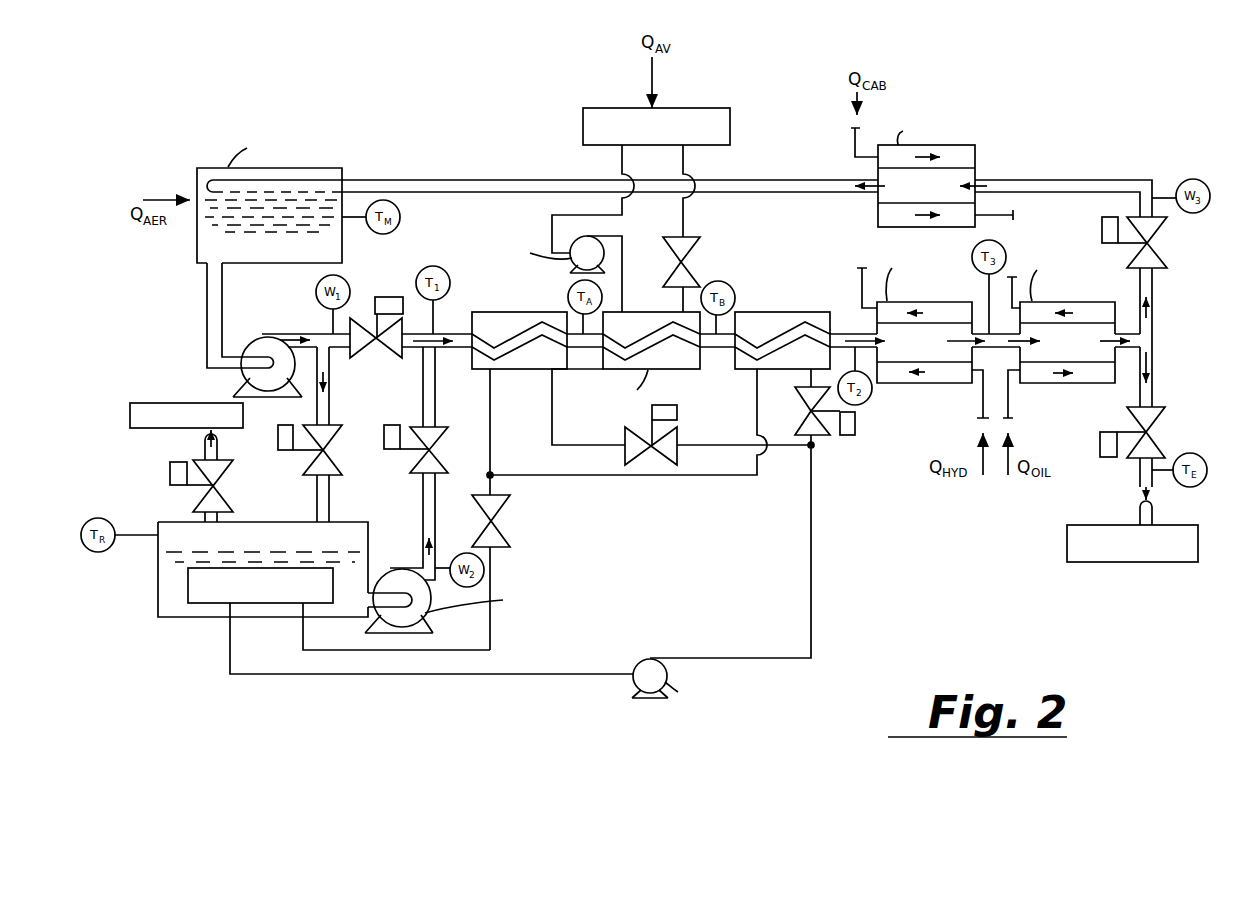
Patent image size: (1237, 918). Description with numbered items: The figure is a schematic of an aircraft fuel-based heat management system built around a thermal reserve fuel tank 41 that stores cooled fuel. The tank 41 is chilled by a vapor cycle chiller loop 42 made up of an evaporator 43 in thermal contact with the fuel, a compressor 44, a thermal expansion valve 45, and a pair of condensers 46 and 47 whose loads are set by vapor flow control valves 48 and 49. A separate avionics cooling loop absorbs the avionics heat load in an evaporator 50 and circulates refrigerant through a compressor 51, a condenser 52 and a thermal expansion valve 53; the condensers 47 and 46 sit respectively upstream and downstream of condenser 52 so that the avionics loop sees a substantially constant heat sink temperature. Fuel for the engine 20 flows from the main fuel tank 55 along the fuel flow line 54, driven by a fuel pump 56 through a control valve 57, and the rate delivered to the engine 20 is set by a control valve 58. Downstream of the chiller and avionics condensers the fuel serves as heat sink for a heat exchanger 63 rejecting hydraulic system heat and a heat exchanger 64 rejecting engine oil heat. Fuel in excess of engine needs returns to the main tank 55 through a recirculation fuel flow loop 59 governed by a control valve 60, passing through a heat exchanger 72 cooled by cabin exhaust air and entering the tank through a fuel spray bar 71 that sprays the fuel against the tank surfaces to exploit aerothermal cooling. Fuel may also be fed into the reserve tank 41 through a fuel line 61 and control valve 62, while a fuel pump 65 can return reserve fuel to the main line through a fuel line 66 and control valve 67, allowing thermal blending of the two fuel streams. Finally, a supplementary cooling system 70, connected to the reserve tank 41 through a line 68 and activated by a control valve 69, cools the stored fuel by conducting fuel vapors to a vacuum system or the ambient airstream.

The engine 20 is at (1067, 550).
The thermal reserve fuel tank 41 is at (158, 577).
The vapor cycle chiller loop 42 is at (810, 517).
The evaporator 43 is at (187, 588).
The compressor 44 is at (637, 660).
The thermal expansion valve 45 is at (500, 532).
The condenser 46 is at (820, 280).
The condenser 47 is at (527, 282).
The vapor flow control valve 48 is at (817, 437).
The vapor flow control valve 49 is at (622, 435).
The evaporator 50 is at (583, 128).
The compressor 51 is at (573, 248).
The condenser 52 is at (665, 312).
The thermal expansion valve 53 is at (700, 240).
The fuel flow line 54 is at (207, 310).
The main fuel tank 55 is at (343, 242).
The fuel pump 56 is at (285, 307).
The control valve 57 is at (392, 353).
The control valve 58 is at (1157, 442).
The recirculation fuel flow loop 59 is at (1112, 180).
The control valve 60 is at (1160, 255).
The fuel line 61 is at (328, 421).
The control valve 62 is at (333, 464).
The heat exchanger 63 is at (937, 387).
The heat exchanger 64 is at (1067, 387).
The fuel pump 65 is at (405, 567).
The fuel line 66 is at (422, 506).
The control valve 67 is at (433, 456).
The line 68 is at (218, 450).
The control valve 69 is at (233, 502).
The supplementary cooling system 70 is at (152, 430).
The fuel spray bar 71 is at (217, 180).
The heat exchanger 72 is at (975, 162).